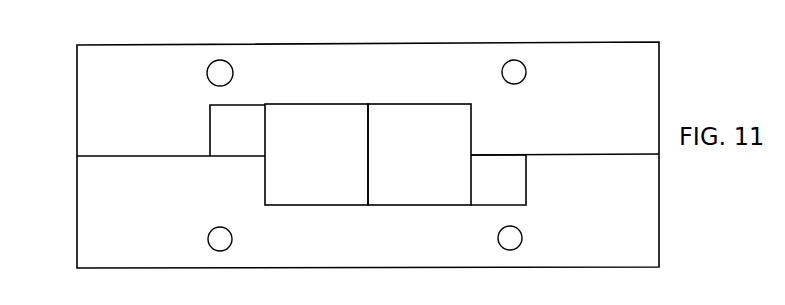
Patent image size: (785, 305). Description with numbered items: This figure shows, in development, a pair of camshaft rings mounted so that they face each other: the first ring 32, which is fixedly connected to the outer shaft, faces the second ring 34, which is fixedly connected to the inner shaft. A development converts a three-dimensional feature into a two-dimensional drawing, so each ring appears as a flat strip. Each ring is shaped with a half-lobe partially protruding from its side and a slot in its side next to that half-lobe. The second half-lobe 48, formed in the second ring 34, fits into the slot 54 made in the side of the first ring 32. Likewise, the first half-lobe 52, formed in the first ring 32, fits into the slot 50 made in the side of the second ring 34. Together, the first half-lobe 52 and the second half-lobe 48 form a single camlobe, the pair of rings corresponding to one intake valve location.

The first ring 32 is at (88, 80).
The second ring 34 is at (88, 203).
The second half-lobe 48 is at (317, 182).
The slot 50 is at (493, 182).
The first half-lobe 52 is at (447, 120).
The slot 54 is at (243, 120).